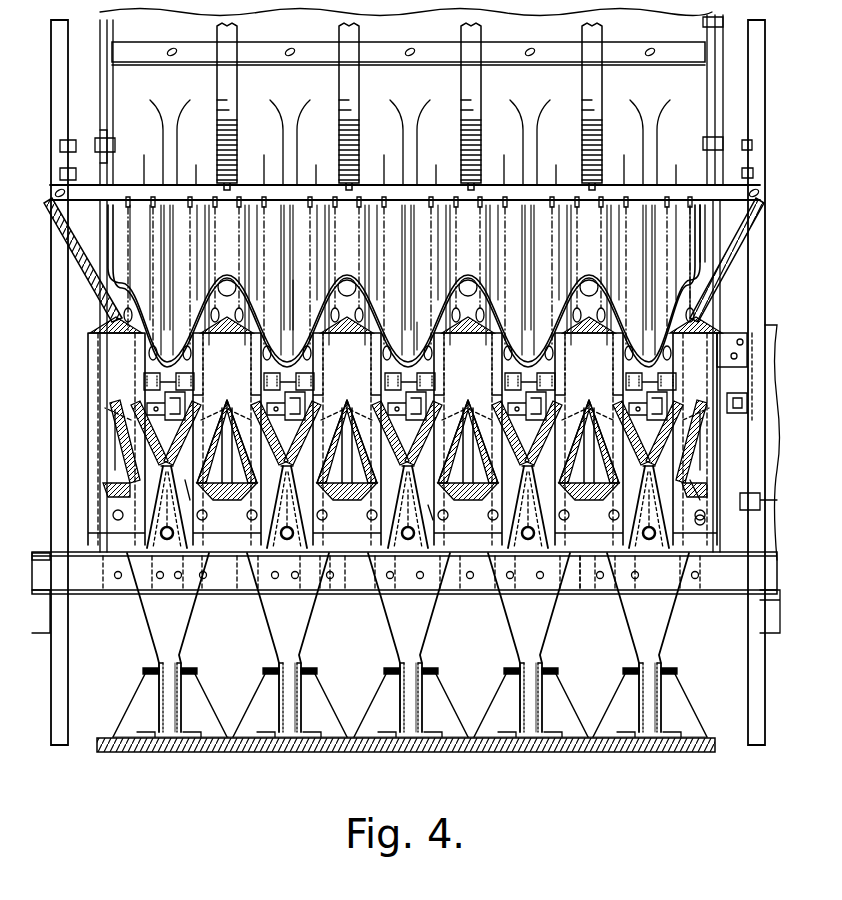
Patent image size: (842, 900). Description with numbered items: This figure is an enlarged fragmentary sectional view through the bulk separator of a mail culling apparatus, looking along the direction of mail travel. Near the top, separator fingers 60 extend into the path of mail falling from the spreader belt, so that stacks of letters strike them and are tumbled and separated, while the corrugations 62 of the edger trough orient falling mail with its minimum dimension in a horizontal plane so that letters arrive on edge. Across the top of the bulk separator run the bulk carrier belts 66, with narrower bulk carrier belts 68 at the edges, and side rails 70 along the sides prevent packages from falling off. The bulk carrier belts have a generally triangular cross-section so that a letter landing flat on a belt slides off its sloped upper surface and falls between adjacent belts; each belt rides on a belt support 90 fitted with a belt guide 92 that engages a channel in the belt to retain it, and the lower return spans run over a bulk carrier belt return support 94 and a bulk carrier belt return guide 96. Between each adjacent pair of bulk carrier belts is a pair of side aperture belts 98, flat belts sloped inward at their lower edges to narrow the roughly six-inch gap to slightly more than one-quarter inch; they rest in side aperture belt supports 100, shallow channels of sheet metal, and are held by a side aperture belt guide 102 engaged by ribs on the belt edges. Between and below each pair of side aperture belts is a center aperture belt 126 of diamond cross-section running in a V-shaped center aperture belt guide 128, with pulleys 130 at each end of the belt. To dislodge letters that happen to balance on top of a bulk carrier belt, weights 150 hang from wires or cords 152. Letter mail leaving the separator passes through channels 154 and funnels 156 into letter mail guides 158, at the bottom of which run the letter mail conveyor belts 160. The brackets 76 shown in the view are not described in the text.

The separator fingers 60 is at (339, 82).
The corrugations 62 is at (293, 280).
The bulk carrier belts 66 is at (248, 320).
The bulk carrier belts 68 is at (112, 320).
The side rails 70 is at (740, 265).
The bracket 76 is at (160, 420).
The belt support 90 is at (120, 352).
The belt guide 92 is at (118, 342).
The bulk carrier belt return support 94 is at (685, 500).
The bulk carrier belt return guide 96 is at (103, 493).
The side aperture belts 98 is at (295, 463).
The side aperture belt supports 100 is at (408, 364).
The side aperture belt guide 102 is at (335, 410).
The center aperture belt 126 is at (147, 465).
The center aperture belt guide 128 is at (185, 480).
The pulleys 130 is at (217, 580).
The weights 150 is at (477, 308).
The wires or cords 152 is at (692, 215).
The channels 154 is at (345, 556).
The funnels 156 is at (270, 642).
The letter mail guides 158 is at (275, 693).
The letter mail conveyor belts 160 is at (395, 755).